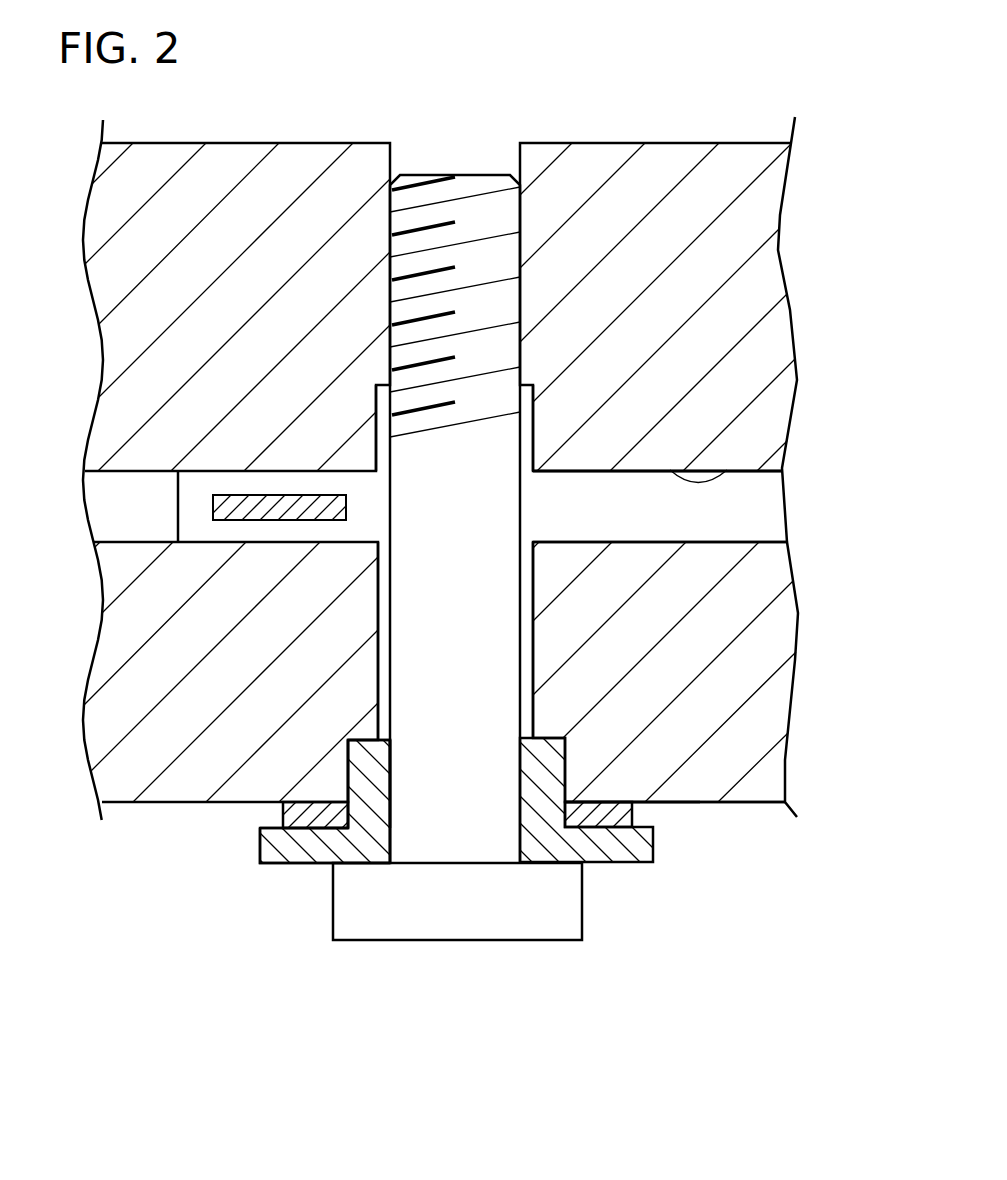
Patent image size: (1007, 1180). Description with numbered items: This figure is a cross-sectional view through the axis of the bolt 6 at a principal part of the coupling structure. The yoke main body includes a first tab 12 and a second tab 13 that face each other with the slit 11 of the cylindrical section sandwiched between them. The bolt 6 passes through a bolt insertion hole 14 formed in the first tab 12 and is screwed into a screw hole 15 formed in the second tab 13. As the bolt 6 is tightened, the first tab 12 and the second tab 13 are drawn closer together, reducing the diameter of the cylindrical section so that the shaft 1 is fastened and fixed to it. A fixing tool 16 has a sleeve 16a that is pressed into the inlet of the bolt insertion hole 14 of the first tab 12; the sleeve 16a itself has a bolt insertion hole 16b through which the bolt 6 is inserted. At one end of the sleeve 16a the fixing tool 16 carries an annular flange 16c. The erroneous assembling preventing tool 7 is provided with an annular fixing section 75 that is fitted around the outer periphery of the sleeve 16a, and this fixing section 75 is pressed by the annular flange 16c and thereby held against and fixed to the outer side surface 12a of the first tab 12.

The shaft 1 is at (767, 508).
The bolt 6 is at (487, 925).
The erroneous assembling preventing tool 7 is at (612, 795).
The slit 11 is at (727, 470).
The first tab 12 is at (777, 627).
The outer side surface 12a is at (742, 802).
The second tab 13 is at (750, 217).
The bolt insertion hole 14 is at (378, 648).
The screw hole 15 is at (518, 244).
The fixing tool 16 is at (277, 864).
The sleeve 16a is at (357, 757).
The bolt insertion hole 16b is at (392, 826).
The annular flange 16c is at (280, 843).
The annular fixing section 75 is at (608, 818).